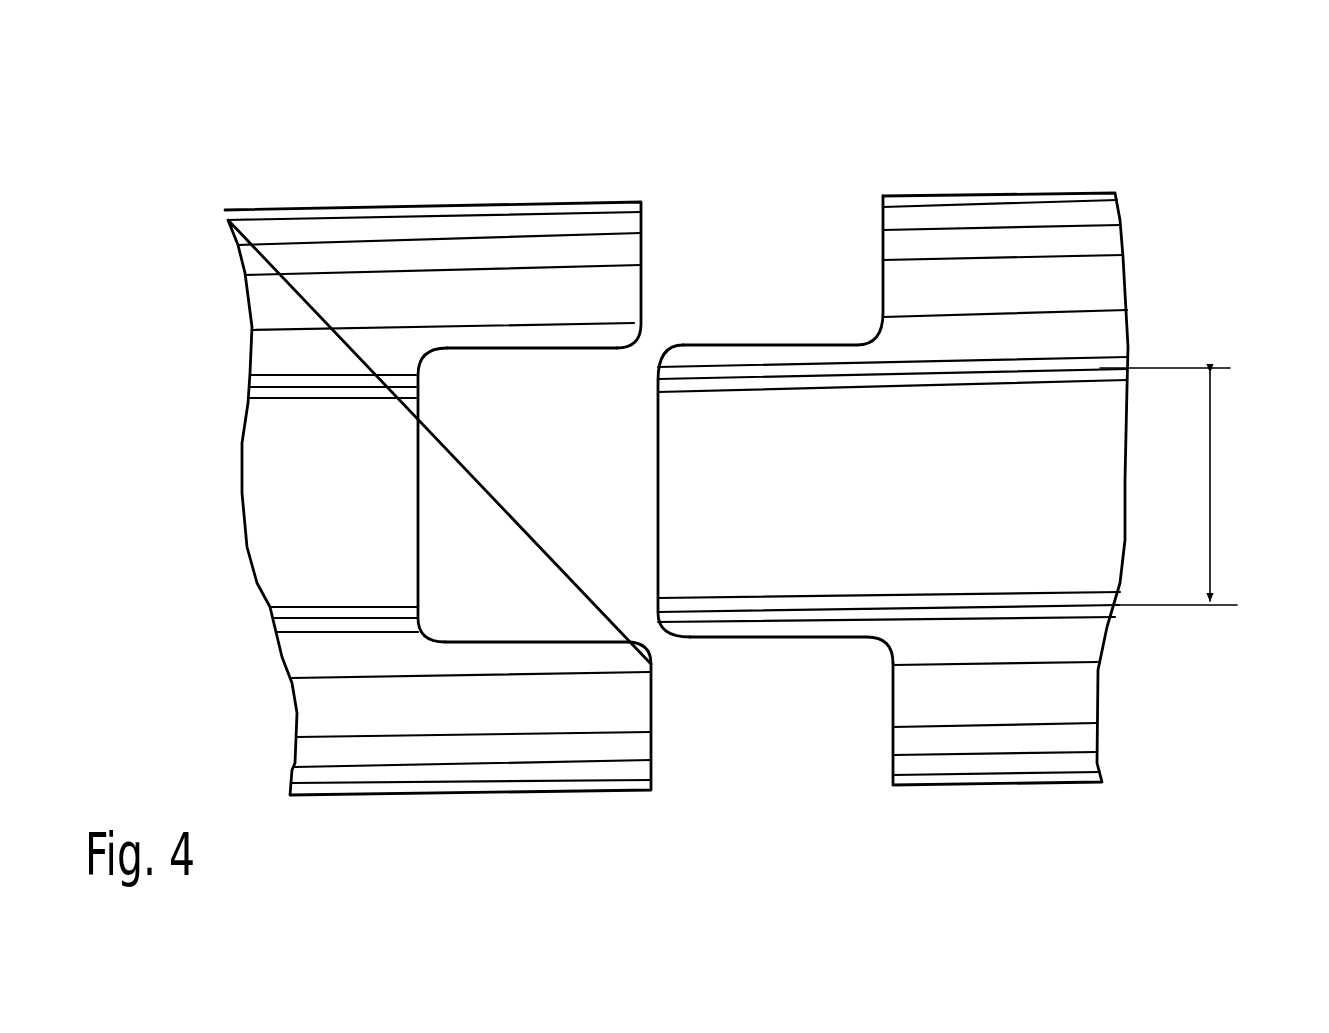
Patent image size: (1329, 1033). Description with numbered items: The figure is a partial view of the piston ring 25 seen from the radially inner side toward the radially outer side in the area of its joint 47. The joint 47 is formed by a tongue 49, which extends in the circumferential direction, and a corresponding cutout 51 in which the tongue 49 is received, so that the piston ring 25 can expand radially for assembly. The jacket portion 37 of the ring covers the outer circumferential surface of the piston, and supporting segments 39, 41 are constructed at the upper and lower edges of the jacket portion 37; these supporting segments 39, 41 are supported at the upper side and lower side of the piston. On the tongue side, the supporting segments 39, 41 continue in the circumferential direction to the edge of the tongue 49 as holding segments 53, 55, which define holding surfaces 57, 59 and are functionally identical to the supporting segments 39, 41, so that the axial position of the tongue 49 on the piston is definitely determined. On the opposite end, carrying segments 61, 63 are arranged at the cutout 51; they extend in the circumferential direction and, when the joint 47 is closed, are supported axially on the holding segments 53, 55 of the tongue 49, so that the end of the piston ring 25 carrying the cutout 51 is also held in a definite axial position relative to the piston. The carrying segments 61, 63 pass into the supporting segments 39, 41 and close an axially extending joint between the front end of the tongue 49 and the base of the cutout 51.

The piston ring 25 is at (1150, 152).
The jacket portion 37 is at (1215, 483).
The supporting segment 39 is at (297, 360).
The supporting segment 41 is at (338, 653).
The joint 47 is at (708, 160).
The tongue 49 is at (715, 567).
The cutout 51 is at (453, 493).
The holding segment 53 is at (768, 355).
The holding segment 55 is at (788, 630).
The holding surface 57 is at (860, 379).
The holding surface 59 is at (814, 606).
The carrying segment 61 is at (482, 340).
The carrying segment 63 is at (523, 658).